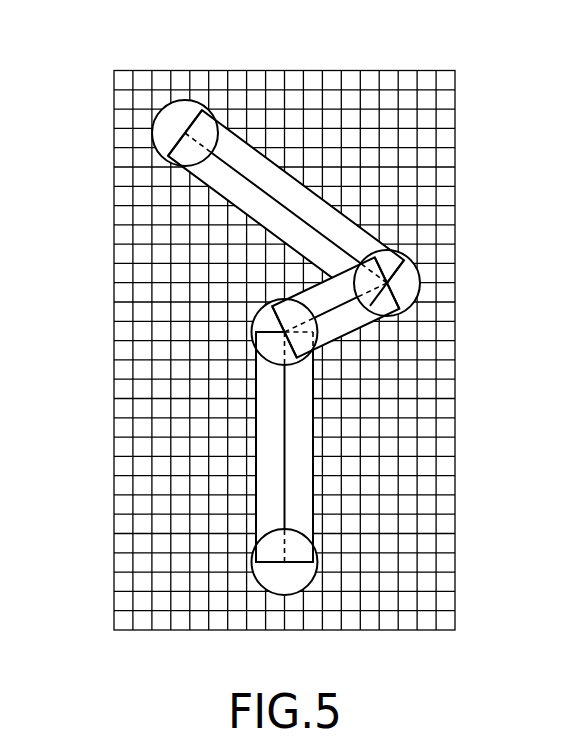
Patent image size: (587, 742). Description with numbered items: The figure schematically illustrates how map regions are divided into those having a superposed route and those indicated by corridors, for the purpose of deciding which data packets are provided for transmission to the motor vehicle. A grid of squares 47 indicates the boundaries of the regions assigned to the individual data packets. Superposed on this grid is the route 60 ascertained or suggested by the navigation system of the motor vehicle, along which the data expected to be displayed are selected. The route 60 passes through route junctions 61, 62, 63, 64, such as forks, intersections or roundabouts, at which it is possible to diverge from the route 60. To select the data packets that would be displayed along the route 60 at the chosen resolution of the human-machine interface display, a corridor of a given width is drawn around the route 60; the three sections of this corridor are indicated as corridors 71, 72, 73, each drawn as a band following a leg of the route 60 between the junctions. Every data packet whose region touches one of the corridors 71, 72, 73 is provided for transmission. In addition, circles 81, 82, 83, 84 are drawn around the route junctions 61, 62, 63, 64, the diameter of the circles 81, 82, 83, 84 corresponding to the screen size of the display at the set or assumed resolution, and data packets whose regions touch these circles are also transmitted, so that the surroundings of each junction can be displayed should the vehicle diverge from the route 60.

The squares 47 is at (220, 543).
The route 60 is at (294, 349).
The route junction 61 is at (285, 562).
The route junction 62 is at (284, 332).
The route junction 63 is at (387, 283).
The route junction 64 is at (185, 133).
The corridor 71 is at (256, 405).
The corridor 72 is at (355, 330).
The corridor 73 is at (318, 190).
The circle 81 is at (317, 578).
The circle 82 is at (250, 336).
The circle 83 is at (423, 272).
The circle 84 is at (153, 126).